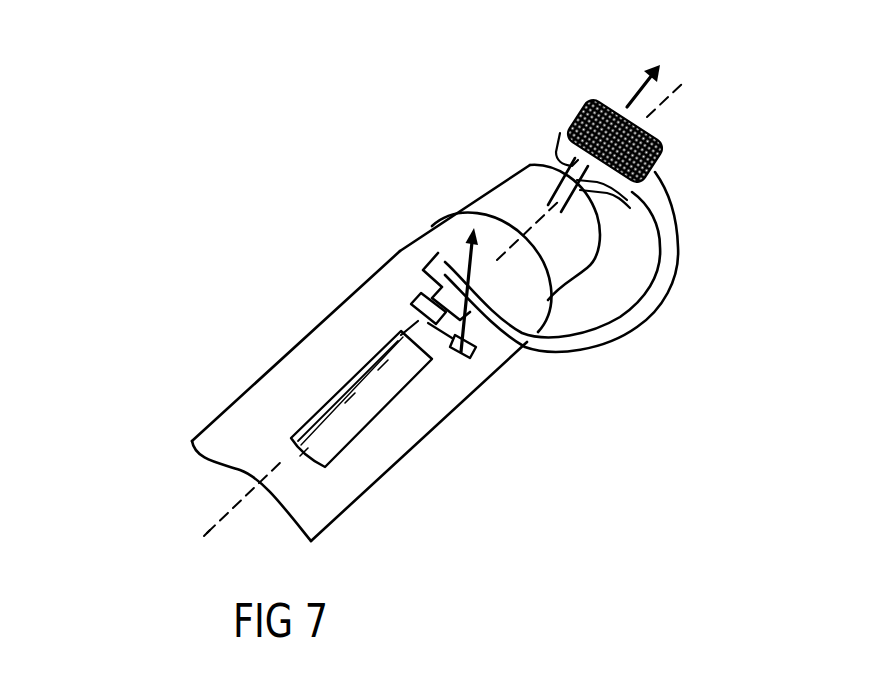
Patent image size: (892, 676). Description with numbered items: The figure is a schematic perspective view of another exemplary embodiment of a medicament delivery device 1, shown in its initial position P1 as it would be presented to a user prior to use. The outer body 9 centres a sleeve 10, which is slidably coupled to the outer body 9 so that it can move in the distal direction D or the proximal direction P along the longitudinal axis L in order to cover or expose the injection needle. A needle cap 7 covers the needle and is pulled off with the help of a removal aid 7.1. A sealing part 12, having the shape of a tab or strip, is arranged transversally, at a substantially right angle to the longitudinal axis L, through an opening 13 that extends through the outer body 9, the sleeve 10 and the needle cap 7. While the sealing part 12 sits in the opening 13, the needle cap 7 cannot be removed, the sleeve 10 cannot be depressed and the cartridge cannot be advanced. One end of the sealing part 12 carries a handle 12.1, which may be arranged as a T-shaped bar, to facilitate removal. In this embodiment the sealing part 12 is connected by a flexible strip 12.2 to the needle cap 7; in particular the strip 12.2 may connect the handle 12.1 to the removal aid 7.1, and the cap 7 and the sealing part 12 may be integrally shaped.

The medicament delivery device 1 is at (393, 102).
The needle cap 7 is at (568, 162).
The removal aid 7.1 is at (583, 112).
The outer body 9 is at (308, 365).
The sleeve 10 is at (497, 200).
The sealing part 12 is at (410, 257).
The handle 12.1 is at (443, 260).
The flexible strip 12.2 is at (647, 308).
The opening 13 is at (472, 363).
The initial position P1 is at (281, 248).
The longitudinal axis L is at (223, 512).
The proximal direction P is at (197, 544).
The distal direction D is at (667, 79).